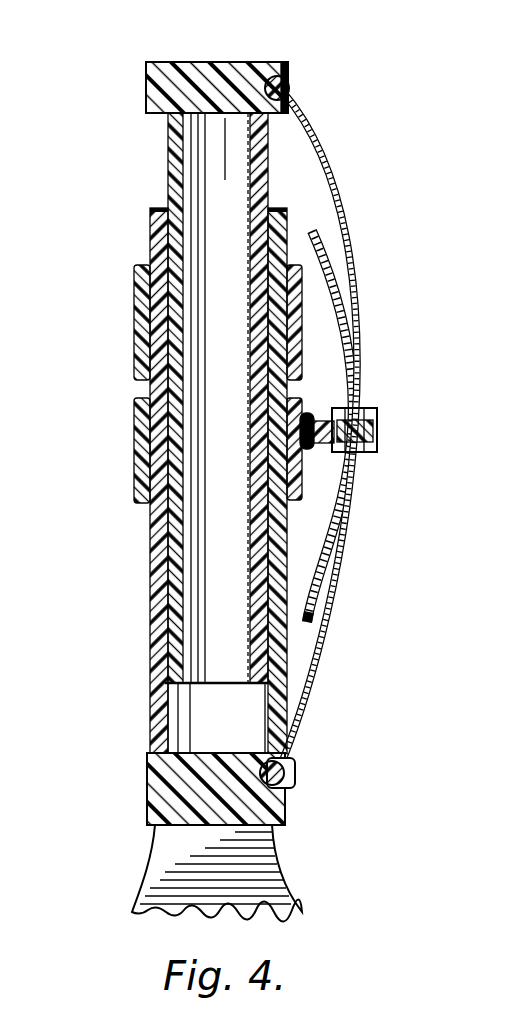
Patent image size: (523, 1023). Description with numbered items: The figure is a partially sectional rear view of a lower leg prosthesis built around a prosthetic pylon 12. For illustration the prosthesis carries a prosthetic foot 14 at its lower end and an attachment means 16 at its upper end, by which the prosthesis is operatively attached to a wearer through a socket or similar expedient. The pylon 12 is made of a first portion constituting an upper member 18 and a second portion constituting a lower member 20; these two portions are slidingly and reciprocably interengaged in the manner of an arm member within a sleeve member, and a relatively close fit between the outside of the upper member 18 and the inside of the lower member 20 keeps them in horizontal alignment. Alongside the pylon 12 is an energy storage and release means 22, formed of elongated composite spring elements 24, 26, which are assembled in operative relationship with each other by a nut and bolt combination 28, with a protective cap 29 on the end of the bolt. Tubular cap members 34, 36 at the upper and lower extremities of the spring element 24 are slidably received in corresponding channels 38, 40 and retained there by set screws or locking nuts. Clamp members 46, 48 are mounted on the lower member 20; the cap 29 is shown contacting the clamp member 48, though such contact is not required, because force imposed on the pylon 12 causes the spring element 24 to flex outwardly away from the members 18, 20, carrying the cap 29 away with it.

The prosthetic pylon 12 is at (120, 387).
The prosthetic foot 14 is at (136, 868).
The attachment means 16 is at (171, 62).
The upper member 18 is at (168, 150).
The lower member 20 is at (148, 653).
The energy storage and release means 22 is at (357, 229).
The spring element 24 is at (350, 548).
The spring element 26 is at (315, 612).
The nut and bolt combination 28 is at (378, 447).
The protective cap 29 is at (318, 405).
The tubular cap member 34 is at (293, 92).
The tubular cap member 36 is at (295, 772).
The channel 38 is at (280, 65).
The channel 40 is at (288, 796).
The upper outer sleeve 46 is at (122, 317).
The clamp member 48 is at (135, 452).